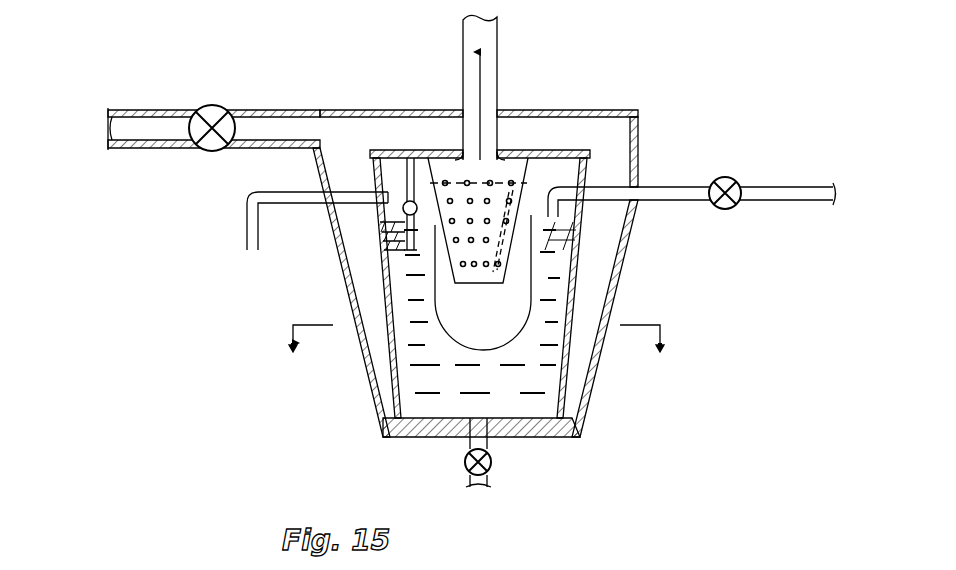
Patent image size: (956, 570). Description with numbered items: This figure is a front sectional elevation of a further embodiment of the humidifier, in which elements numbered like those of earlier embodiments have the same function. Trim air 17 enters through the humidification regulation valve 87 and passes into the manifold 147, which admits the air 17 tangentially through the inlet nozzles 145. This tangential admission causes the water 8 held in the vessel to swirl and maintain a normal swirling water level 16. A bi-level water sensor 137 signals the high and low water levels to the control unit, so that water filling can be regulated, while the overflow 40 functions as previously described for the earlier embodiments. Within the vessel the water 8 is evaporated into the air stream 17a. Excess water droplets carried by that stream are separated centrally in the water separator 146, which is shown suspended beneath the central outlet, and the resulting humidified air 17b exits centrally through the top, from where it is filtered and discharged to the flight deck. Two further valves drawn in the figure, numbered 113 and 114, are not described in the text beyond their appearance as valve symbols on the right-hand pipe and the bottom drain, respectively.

The water 8 is at (535, 383).
The water level 16 is at (653, 268).
The trim air 17 is at (108, 130).
The air stream 17a is at (516, 266).
The humidified air 17b is at (482, 85).
The overflow 40 is at (247, 220).
The humidification regulation valve 87 is at (216, 108).
The valve 113 is at (728, 181).
The drain valve 114 is at (492, 463).
The bi-level water sensor 137 is at (404, 212).
The inlet nozzles 145 is at (390, 367).
The water separator 146 is at (503, 183).
The manifold 147 is at (640, 111).